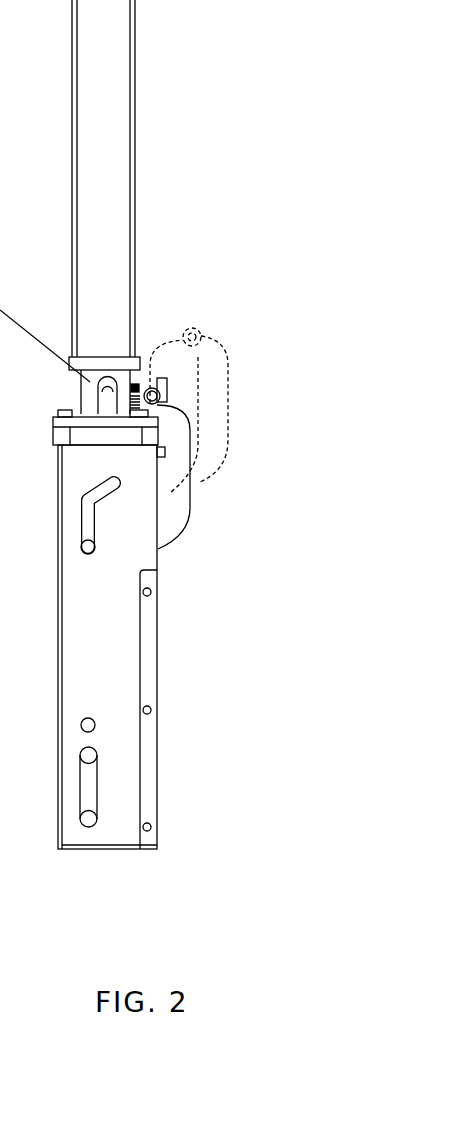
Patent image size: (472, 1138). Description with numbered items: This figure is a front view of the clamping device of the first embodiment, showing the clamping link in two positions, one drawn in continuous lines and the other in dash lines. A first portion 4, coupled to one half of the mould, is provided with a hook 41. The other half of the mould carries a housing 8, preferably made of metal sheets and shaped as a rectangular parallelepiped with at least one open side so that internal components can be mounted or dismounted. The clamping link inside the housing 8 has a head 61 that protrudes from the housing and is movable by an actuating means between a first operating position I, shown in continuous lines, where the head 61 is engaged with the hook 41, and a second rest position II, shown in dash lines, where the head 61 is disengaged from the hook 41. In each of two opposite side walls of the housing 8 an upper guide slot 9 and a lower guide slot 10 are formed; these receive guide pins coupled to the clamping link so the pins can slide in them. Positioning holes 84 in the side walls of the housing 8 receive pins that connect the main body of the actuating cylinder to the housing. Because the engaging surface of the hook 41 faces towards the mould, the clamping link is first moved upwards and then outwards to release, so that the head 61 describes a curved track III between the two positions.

The first portion 4 is at (110, 158).
The hook 41 is at (208, 370).
The head 61 is at (173, 510).
The housing 8 is at (105, 608).
The upper guide slot 9 is at (88, 522).
The positioning hole 84 is at (92, 722).
The lower guide slot 10 is at (88, 787).
The first operating position I is at (203, 507).
The second rest position II is at (237, 407).
The curved track III is at (157, 353).